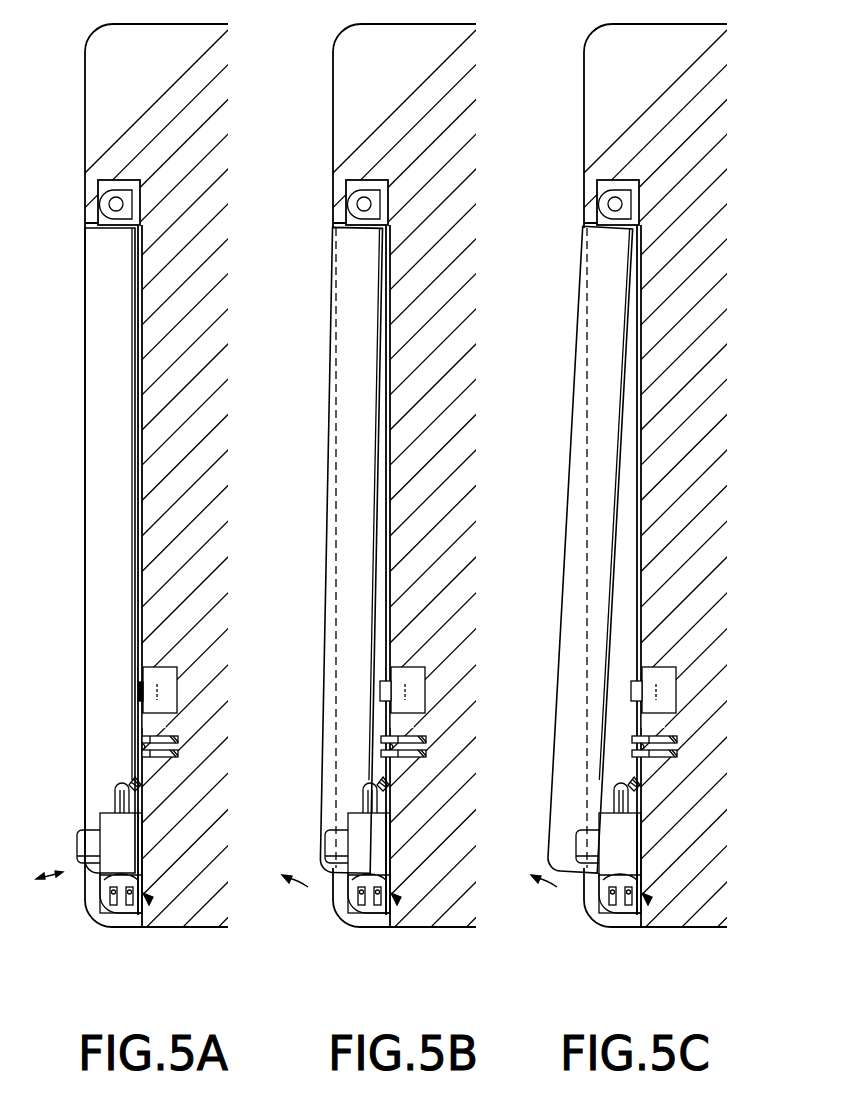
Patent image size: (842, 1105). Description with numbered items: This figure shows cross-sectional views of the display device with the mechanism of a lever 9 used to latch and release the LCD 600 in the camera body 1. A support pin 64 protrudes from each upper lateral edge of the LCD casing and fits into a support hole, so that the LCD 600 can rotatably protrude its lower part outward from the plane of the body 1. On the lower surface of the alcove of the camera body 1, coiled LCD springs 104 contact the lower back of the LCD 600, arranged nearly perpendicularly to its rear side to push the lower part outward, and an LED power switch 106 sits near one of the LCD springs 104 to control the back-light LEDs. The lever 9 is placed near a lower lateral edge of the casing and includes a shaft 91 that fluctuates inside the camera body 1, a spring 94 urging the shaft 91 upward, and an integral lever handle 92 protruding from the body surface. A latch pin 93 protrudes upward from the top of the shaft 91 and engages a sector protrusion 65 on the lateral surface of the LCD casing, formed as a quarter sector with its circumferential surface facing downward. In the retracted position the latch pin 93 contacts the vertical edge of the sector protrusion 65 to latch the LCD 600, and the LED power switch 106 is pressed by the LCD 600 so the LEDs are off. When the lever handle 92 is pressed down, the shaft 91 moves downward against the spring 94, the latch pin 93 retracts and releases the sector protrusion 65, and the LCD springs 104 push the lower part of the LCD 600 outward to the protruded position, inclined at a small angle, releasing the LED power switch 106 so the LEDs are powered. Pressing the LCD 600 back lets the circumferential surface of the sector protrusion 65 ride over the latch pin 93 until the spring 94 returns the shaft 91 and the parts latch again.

In FIG. 5A, the camera body 1 is at (208, 908).
In FIG. 5B, the camera body 1 is at (208, 908).
In FIG. 5C, the camera body 1 is at (208, 908).
In FIG. 5A, the lever 9 is at (148, 903).
In FIG. 5B, the lever 9 is at (410, 931).
In FIG. 5C, the lever 9 is at (661, 931).
In FIG. 5A, the support pin 64 is at (108, 204).
In FIG. 5B, the support pin 64 is at (334, 202).
In FIG. 5C, the support pin 64 is at (585, 202).
In FIG. 5A, the sector protrusion 65 is at (133, 781).
In FIG. 5B, the sector protrusion 65 is at (364, 753).
In FIG. 5C, the sector protrusion 65 is at (602, 753).
In FIG. 5A, the shaft 91 is at (118, 857).
In FIG. 5B, the shaft 91 is at (369, 863).
In FIG. 5C, the shaft 91 is at (620, 863).
In FIG. 5A, the lever handle 92 is at (80, 843).
In FIG. 5B, the lever handle 92 is at (314, 873).
In FIG. 5C, the lever handle 92 is at (562, 871).
In FIG. 5A, the latch pin 93 is at (117, 790).
In FIG. 5B, the latch pin 93 is at (330, 803).
In FIG. 5C, the latch pin 93 is at (572, 797).
In FIG. 5A, the spring 94 is at (113, 910).
In FIG. 5B, the spring 94 is at (369, 921).
In FIG. 5C, the spring 94 is at (620, 921).
In FIG. 5A, the LCD springs 104 is at (177, 760).
In FIG. 5B, the LCD springs 104 is at (461, 746).
In FIG. 5C, the LCD springs 104 is at (712, 746).
In FIG. 5A, the LED power switch 106 is at (163, 692).
In FIG. 5B, the LED power switch 106 is at (460, 687).
In FIG. 5C, the LED power switch 106 is at (711, 687).
In FIG. 5A, the LCD 600 is at (85, 515).
In FIG. 5B, the LCD 600 is at (326, 550).
In FIG. 5C, the LCD 600 is at (573, 549).